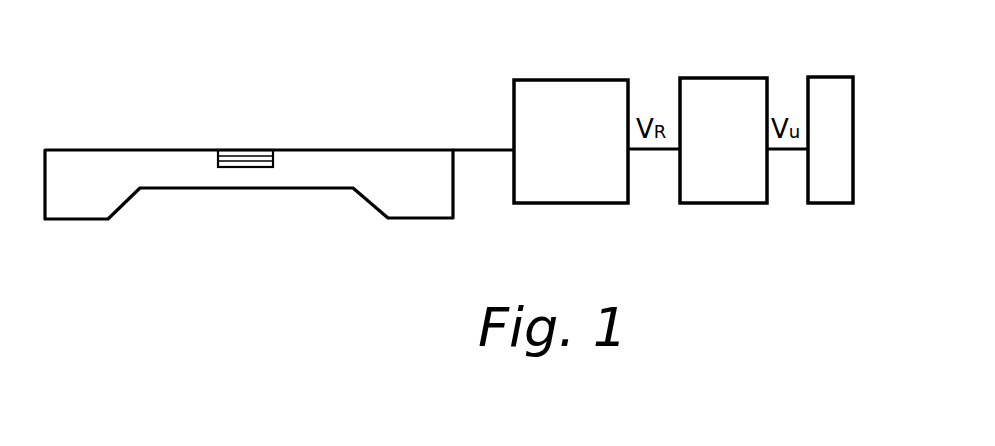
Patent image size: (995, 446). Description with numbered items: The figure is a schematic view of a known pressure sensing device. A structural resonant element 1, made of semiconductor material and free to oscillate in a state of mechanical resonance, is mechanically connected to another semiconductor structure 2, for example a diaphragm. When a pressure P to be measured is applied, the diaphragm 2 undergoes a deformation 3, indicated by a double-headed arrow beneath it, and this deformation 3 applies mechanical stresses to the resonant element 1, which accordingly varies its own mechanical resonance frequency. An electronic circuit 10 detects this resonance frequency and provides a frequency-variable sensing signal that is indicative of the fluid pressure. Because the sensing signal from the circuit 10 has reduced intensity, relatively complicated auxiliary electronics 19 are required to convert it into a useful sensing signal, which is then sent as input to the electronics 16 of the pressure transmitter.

The resonant element 1 is at (263, 148).
The semiconductor structure 2 is at (92, 204).
The deformation 3 is at (195, 198).
The electronic circuit 10 is at (552, 90).
The auxiliary electronics 19 is at (718, 95).
The electronics of the pressure transmitter 16 is at (835, 97).